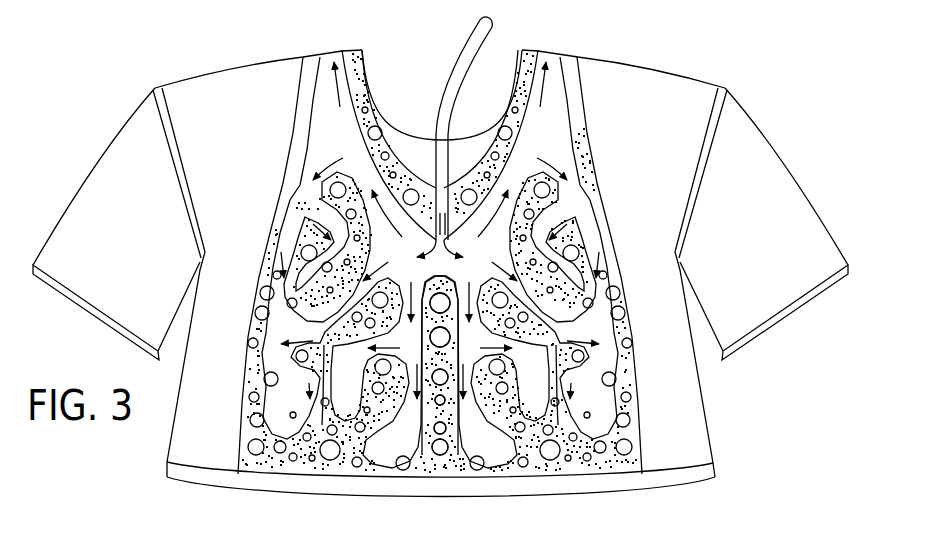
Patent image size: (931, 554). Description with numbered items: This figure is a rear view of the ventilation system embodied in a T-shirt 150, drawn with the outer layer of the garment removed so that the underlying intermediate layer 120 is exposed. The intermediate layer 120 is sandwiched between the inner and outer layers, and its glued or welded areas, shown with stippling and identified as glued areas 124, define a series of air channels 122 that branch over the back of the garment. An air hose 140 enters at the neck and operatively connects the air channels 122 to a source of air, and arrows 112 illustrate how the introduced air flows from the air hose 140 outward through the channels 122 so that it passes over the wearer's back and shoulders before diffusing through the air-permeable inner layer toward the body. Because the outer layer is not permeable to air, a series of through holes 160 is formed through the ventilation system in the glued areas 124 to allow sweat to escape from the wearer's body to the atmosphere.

The arrows 112 is at (338, 92).
The intermediate layer 120 is at (296, 132).
The air channels 122 is at (542, 138).
The glued areas 124 is at (441, 289).
The air hose 140 is at (470, 42).
The T-shirt 150 is at (772, 180).
The through holes 160 is at (350, 213).